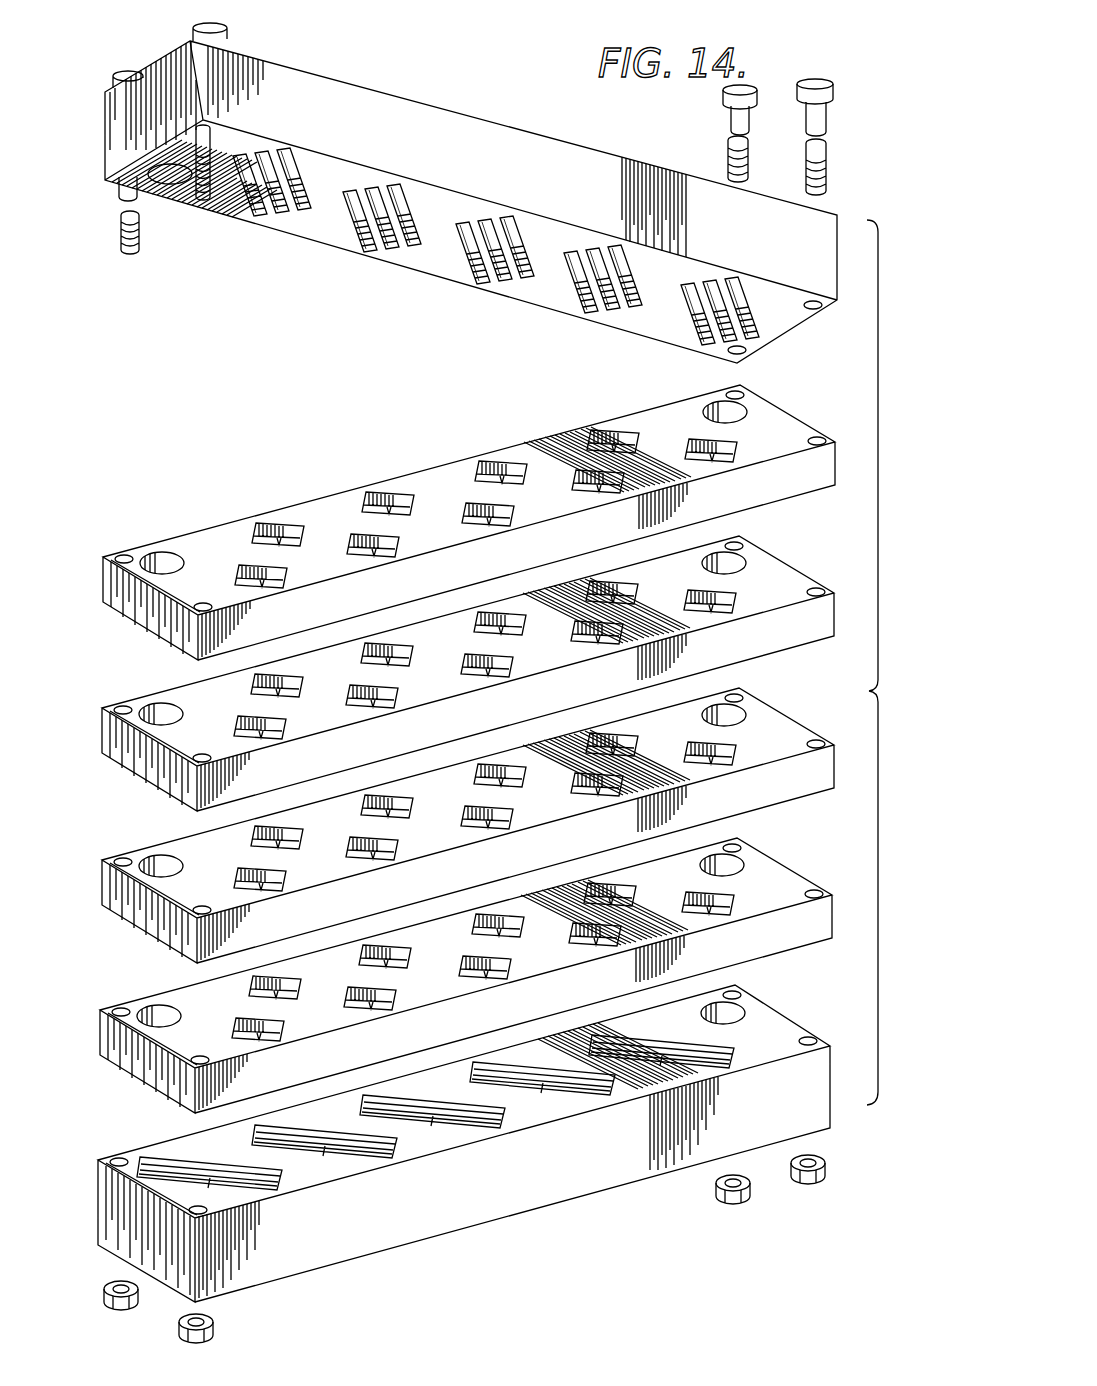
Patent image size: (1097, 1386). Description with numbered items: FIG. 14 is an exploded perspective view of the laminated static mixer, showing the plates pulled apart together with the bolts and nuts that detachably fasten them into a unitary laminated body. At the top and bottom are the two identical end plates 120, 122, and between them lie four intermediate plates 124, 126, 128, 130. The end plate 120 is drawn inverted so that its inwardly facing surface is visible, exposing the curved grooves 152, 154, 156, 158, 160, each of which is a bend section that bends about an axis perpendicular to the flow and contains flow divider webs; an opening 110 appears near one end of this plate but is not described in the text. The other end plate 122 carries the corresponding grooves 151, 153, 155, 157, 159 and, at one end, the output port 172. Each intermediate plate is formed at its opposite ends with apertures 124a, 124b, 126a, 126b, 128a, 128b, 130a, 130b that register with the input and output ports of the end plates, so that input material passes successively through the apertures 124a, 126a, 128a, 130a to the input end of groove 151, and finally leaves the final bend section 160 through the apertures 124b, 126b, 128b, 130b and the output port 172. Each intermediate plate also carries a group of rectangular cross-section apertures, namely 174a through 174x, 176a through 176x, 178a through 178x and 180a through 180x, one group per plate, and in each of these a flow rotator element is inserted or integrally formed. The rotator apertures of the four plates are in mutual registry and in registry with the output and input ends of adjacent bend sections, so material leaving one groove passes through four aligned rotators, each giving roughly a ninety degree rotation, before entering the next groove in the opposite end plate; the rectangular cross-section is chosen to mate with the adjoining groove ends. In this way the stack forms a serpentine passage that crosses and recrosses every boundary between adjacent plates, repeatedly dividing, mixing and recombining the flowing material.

The bore 110 is at (162, 184).
The end plate 120 is at (417, 100).
The end plate 122 is at (448, 1228).
The intermediate plate 124 is at (103, 578).
The aperture 124a is at (159, 556).
The aperture 124b is at (740, 412).
The intermediate plate 126 is at (104, 735).
The aperture 126a is at (158, 710).
The aperture 126b is at (742, 565).
The intermediate plate 128 is at (103, 887).
The aperture 128a is at (147, 863).
The aperture 128b is at (742, 716).
The intermediate plate 130 is at (101, 1037).
The aperture 130a is at (155, 1013).
The aperture 130b is at (742, 866).
The bend section 151 is at (252, 1192).
The bend section 153 is at (350, 1168).
The groove 155 is at (470, 1132).
The groove 157 is at (585, 1103).
The groove 159 is at (700, 1072).
The groove 152 is at (262, 214).
The groove 154 is at (360, 248).
The groove 156 is at (480, 283).
The groove 158 is at (590, 308).
The groove 160 is at (697, 337).
The output port 172 is at (740, 1009).
The rectangular cross-section aperture 174a is at (238, 1030).
The rectangular cross-section aperture 174x is at (733, 898).
The rectangular cross-section aperture 176a is at (238, 880).
The rectangular cross-section aperture 176x is at (733, 747).
The rectangular cross-section aperture 178a is at (238, 728).
The rectangular cross-section aperture 178x is at (733, 597).
The rectangular cross-section aperture 180a is at (256, 565).
The rectangular cross-section aperture 180x is at (734, 446).